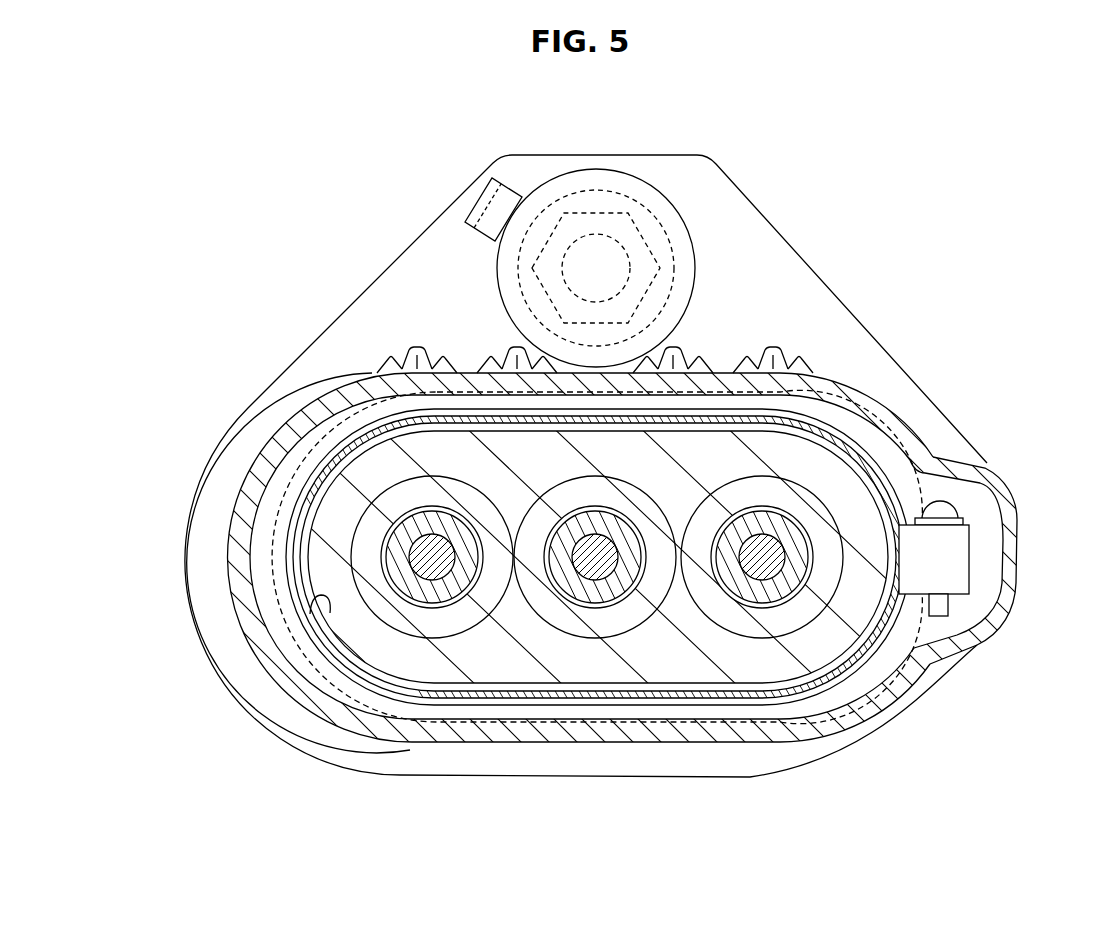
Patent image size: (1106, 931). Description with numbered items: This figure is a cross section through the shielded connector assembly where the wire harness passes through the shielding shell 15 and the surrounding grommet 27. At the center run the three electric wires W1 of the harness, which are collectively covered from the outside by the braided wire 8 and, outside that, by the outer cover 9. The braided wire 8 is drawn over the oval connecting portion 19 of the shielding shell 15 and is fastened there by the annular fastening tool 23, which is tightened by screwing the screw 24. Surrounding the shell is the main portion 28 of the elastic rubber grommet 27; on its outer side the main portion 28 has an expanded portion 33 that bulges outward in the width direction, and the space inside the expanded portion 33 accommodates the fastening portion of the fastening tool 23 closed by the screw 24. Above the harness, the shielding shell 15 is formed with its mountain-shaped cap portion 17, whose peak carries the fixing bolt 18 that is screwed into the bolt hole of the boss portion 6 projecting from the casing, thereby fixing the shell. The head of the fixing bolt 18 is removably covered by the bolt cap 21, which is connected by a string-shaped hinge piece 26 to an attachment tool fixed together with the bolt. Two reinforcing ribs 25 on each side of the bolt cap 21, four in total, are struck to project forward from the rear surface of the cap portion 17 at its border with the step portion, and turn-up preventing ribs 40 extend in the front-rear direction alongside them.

The shielding shell 15 is at (553, 461).
The cap portion 17 is at (755, 243).
The bolt cap 21 is at (595, 178).
The boss portion 6 is at (546, 207).
The fixing bolt 18 is at (603, 257).
The hinge piece 26 is at (490, 183).
The reinforcing ribs 25 is at (410, 352).
The turn-up preventing ribs 40 is at (388, 363).
The main portion 28 is at (910, 437).
The expanded portion 33 is at (1010, 545).
The screw 24 is at (950, 510).
The grommet 27 is at (318, 715).
The connecting portion 19 is at (320, 632).
The fastening tool 23 is at (850, 673).
The braided wire 8 is at (650, 692).
The outer cover 9 is at (453, 627).
The electric wire W1 is at (412, 592).